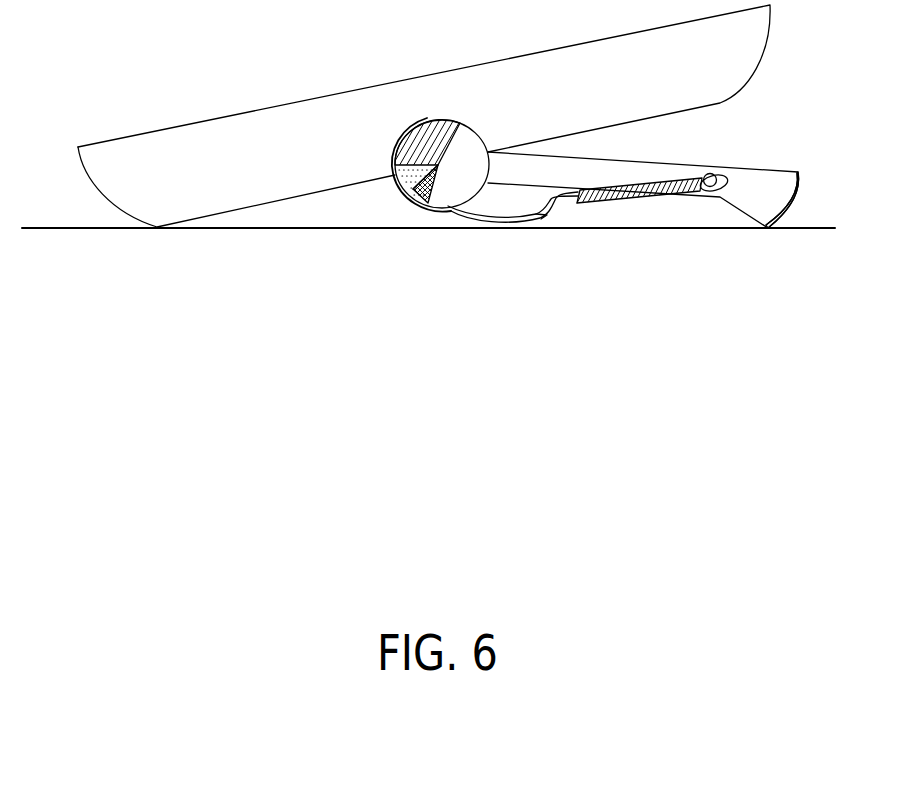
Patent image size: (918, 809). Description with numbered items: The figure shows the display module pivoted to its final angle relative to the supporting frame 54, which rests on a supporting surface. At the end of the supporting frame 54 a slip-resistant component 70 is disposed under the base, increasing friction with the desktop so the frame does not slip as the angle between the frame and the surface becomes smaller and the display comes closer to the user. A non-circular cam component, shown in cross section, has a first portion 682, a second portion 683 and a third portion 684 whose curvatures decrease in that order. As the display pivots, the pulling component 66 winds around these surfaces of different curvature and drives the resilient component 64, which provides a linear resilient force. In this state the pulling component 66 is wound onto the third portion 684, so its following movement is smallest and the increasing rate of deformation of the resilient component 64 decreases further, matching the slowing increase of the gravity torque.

The supporting frame 54 is at (747, 178).
The slip-resistant component 70 is at (788, 200).
The resilient component 64 is at (654, 200).
The pulling component 66 is at (488, 219).
The first portion 682 is at (427, 122).
The second portion 683 is at (397, 173).
The third portion 684 is at (424, 203).